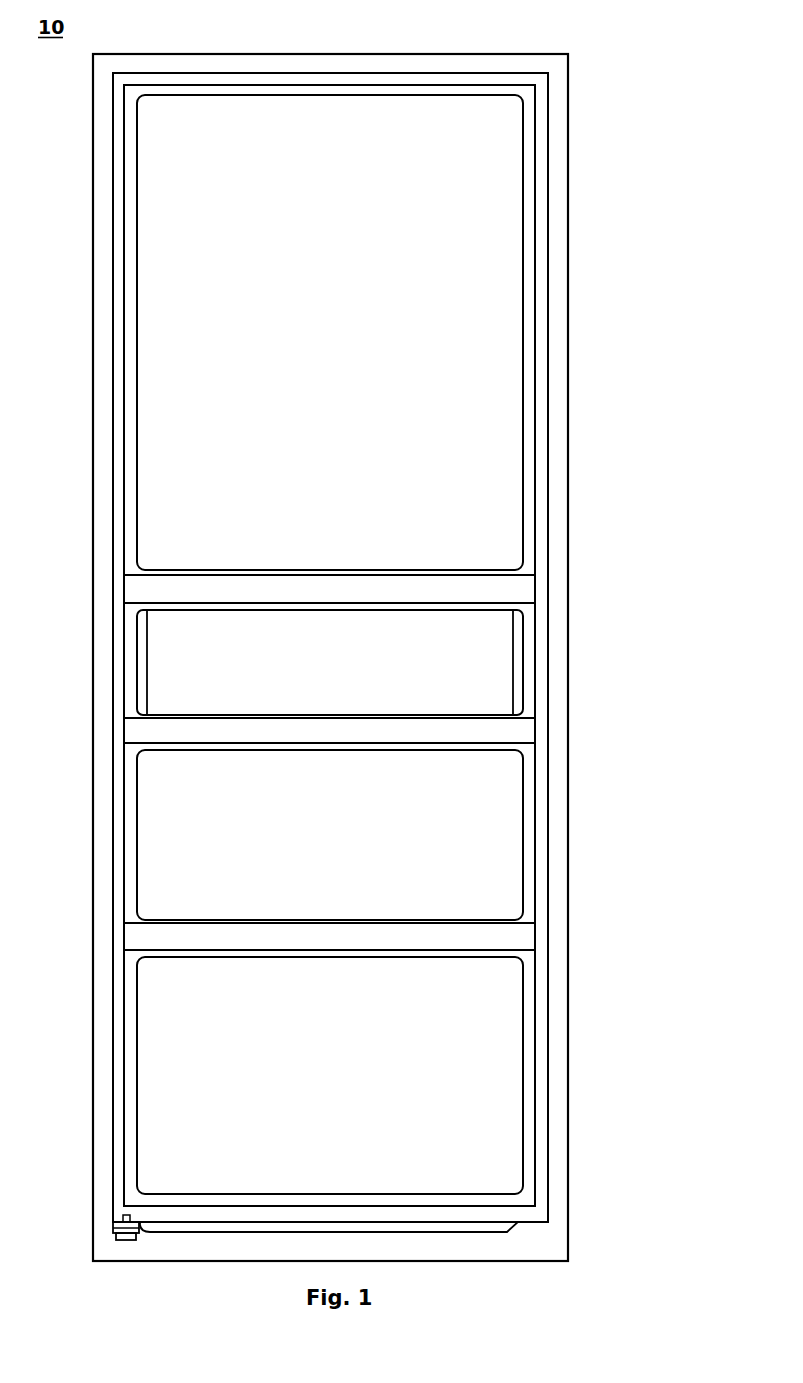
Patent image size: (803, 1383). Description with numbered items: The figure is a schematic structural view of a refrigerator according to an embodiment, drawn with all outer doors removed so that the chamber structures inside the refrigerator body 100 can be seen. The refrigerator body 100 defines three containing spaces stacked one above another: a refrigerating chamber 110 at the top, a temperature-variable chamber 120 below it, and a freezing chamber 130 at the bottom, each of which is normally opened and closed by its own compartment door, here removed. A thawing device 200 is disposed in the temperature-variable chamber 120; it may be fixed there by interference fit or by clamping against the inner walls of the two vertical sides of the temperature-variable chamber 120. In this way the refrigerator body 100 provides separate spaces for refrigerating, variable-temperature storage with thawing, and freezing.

The refrigerator body 100 is at (557, 485).
The refrigerating chamber 110 is at (495, 313).
The temperature-variable chamber 120 is at (518, 648).
The freezing chamber 130 is at (497, 1048).
The thawing device 200 is at (172, 656).